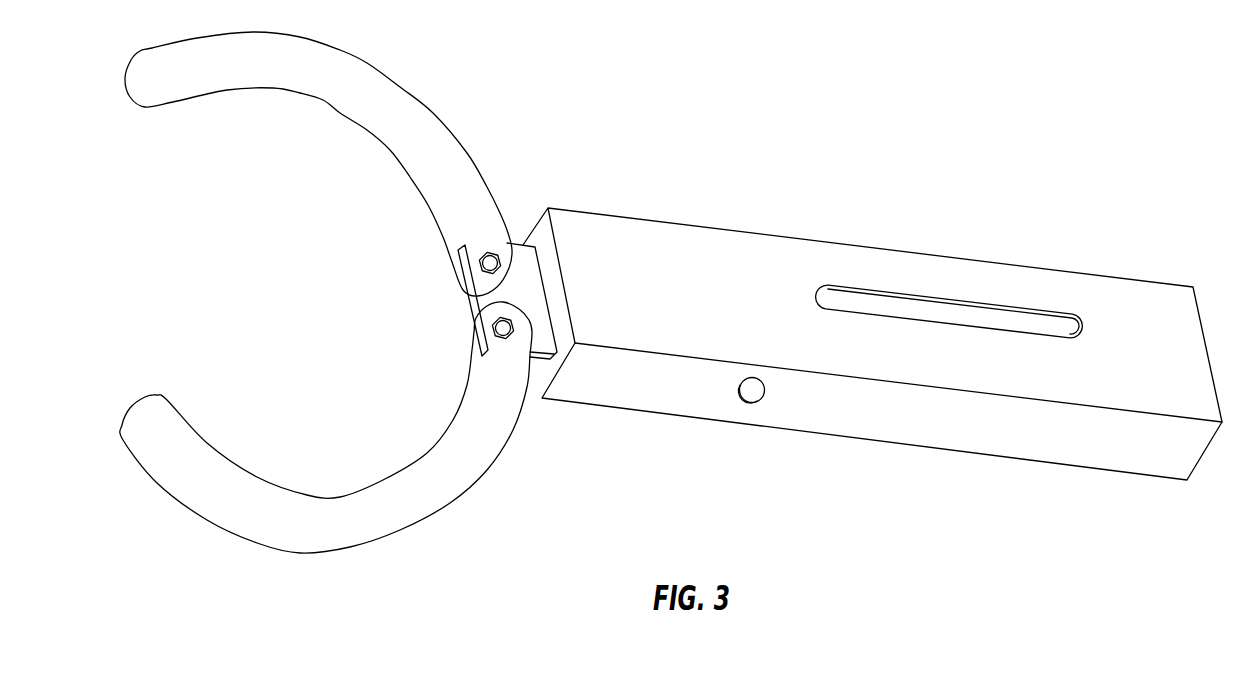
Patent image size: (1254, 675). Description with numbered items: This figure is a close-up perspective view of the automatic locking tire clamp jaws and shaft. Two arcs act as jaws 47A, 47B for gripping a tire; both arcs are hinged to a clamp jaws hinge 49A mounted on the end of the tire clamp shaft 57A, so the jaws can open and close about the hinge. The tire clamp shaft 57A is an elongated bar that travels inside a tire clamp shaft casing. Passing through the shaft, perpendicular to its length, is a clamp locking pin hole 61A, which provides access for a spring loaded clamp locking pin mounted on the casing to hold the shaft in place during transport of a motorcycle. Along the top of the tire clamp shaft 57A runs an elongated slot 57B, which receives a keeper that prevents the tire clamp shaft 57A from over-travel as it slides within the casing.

The clamp jaw arc 47A is at (143, 92).
The clamp jaw arc 47B is at (138, 414).
The clamp jaws hinge 49A is at (525, 256).
The tire clamp shaft 57A is at (826, 240).
The elongated slot 57B is at (942, 328).
The clamp locking pin hole 61A is at (765, 389).